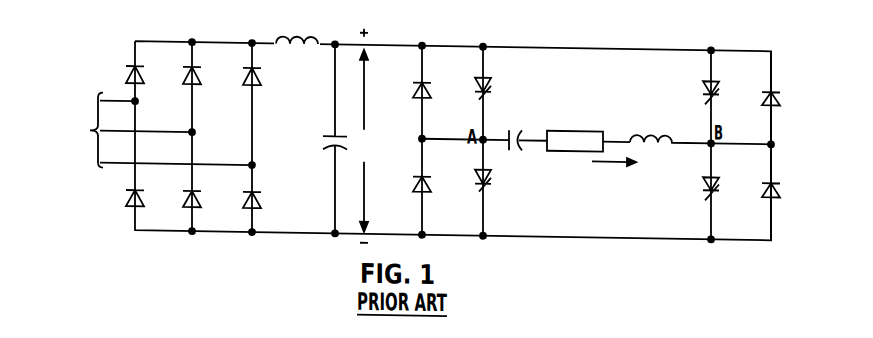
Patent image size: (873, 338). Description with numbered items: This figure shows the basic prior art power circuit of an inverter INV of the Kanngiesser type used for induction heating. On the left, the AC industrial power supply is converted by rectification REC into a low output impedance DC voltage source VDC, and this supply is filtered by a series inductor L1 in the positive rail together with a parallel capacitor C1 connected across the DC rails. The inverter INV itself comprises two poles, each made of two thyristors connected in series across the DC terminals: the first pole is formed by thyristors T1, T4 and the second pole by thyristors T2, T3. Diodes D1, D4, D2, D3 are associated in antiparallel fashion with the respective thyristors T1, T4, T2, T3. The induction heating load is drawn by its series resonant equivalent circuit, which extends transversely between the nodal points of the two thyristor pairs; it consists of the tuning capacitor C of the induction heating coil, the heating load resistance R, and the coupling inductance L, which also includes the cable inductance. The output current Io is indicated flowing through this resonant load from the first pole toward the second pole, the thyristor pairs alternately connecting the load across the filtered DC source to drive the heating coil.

The rectification REC is at (236, 147).
The series inductor L1 is at (295, 53).
The parallel capacitor C1 is at (321, 138).
The voltage source VDC is at (364, 136).
The diode D1 is at (414, 92).
The diode D4 is at (414, 187).
The thyristor T1 is at (471, 82).
The thyristor T4 is at (471, 177).
The thyristor T2 is at (701, 88).
The thyristor T3 is at (699, 176).
The diode D2 is at (762, 91).
The diode D3 is at (762, 184).
The tuning capacitor C is at (513, 126).
The heating load resistance R is at (566, 126).
The coupling inductance L is at (664, 146).
The output current Io is at (614, 177).
The inverter INV is at (608, 89).